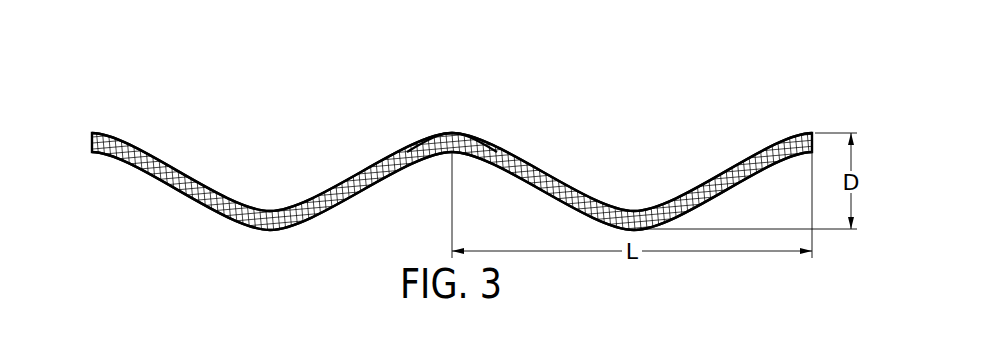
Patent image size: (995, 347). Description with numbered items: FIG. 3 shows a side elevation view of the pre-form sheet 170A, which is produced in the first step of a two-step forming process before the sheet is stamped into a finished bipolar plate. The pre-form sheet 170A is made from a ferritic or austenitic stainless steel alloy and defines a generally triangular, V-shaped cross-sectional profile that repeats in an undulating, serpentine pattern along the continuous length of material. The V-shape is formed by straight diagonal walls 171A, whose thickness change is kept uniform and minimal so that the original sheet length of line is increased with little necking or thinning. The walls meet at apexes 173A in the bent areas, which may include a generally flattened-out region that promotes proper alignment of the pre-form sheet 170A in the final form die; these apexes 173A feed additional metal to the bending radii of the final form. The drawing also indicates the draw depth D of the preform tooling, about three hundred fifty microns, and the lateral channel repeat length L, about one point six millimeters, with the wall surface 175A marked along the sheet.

The pre-form sheet 170A is at (455, 166).
The straight diagonal walls 171A is at (528, 184).
The apexes 173A is at (451, 133).
The upper surface of corrugated band 175A is at (530, 165).